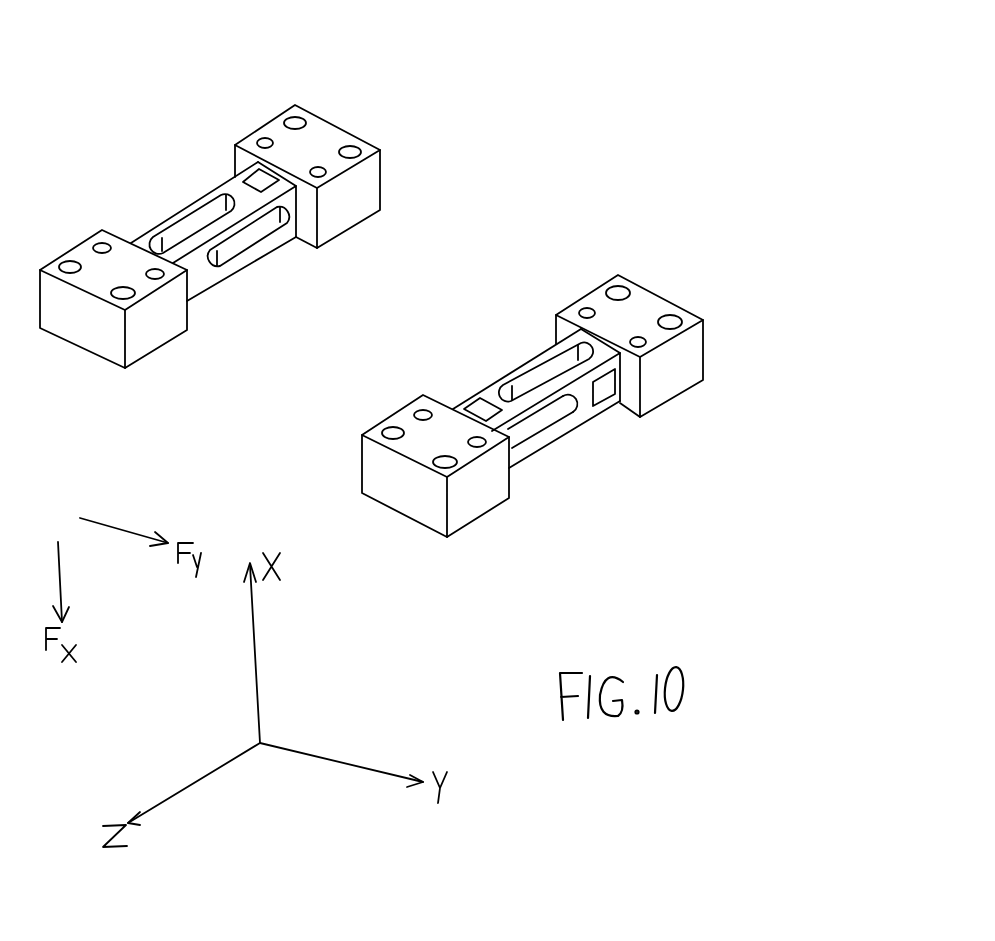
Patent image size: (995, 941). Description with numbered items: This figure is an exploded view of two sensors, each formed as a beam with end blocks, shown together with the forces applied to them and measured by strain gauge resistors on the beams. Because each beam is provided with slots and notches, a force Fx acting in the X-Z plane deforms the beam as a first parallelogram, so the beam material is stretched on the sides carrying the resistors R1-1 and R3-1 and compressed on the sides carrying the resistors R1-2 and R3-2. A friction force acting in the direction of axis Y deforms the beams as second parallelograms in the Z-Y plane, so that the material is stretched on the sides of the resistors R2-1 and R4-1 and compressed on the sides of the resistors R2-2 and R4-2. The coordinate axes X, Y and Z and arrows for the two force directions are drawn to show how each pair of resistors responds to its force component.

The resistor R1-1 is at (255, 178).
The resistor R1-2 is at (280, 246).
The resistor R2-1 is at (187, 267).
The resistor R2-2 is at (135, 237).
The resistor R3-1 is at (478, 408).
The resistor R3-2 is at (512, 470).
The resistor R4-1 is at (608, 387).
The resistor R4-2 is at (545, 338).